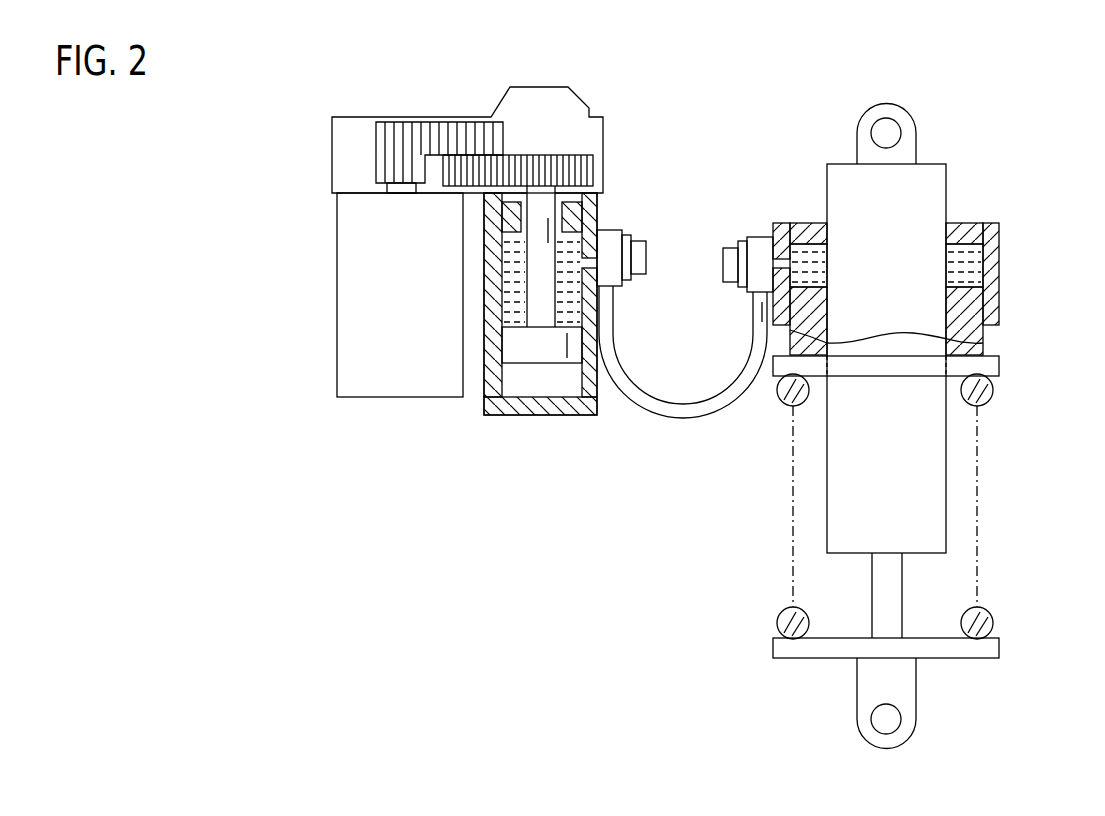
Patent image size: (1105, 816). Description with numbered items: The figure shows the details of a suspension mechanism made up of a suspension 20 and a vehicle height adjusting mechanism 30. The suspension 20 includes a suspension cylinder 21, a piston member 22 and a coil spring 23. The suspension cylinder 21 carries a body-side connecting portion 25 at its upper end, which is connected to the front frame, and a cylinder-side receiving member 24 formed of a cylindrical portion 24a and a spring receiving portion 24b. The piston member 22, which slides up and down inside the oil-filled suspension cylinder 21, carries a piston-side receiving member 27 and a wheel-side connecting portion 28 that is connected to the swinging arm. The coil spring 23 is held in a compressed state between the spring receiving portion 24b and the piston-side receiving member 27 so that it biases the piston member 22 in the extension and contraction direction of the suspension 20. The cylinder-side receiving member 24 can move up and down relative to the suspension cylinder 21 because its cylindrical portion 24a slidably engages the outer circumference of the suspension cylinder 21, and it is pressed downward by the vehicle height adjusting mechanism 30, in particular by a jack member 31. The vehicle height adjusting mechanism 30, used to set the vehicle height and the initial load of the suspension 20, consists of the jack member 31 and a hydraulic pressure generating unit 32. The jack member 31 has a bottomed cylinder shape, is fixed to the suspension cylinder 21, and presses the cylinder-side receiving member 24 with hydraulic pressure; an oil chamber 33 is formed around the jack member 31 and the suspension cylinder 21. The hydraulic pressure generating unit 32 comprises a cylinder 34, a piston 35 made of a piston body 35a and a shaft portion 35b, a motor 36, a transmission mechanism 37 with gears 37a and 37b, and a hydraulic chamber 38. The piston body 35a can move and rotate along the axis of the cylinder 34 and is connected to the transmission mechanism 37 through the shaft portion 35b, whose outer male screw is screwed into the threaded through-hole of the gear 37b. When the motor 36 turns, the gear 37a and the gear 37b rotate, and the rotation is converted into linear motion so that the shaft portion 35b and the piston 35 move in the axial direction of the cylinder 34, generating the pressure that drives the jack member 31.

The suspension 20 is at (993, 476).
The suspension cylinder 21 is at (950, 183).
The piston member 22 is at (910, 585).
The coil spring 23 is at (988, 622).
The cylinder-side receiving member 24 is at (1008, 355).
The cylindrical portion 24a is at (950, 307).
The spring receiving portion 24b is at (990, 367).
The body-side connecting portion 25 is at (897, 104).
The piston-side receiving member 27 is at (982, 652).
The wheel-side connecting portion 28 is at (857, 712).
The vehicle height adjusting mechanism 30 is at (305, 122).
The jack member 31 is at (1003, 243).
The hydraulic pressure generating unit 32 is at (330, 155).
The oil chamber 33 is at (807, 254).
The cylinder 34 is at (513, 417).
The piston 35 is at (403, 285).
The piston body 35a is at (525, 345).
The shaft portion 35b is at (543, 273).
The motor 36 is at (336, 311).
The transmission mechanism 37 is at (420, 55).
The gear 37a is at (442, 122).
The gear 37b is at (525, 157).
The hydraulic chamber 38 is at (572, 240).